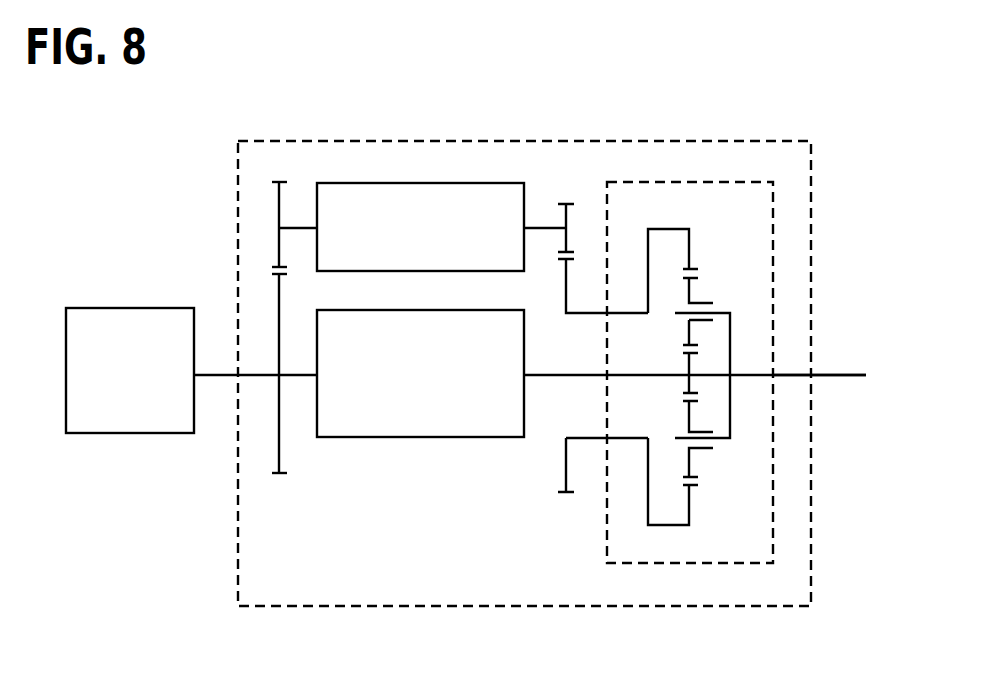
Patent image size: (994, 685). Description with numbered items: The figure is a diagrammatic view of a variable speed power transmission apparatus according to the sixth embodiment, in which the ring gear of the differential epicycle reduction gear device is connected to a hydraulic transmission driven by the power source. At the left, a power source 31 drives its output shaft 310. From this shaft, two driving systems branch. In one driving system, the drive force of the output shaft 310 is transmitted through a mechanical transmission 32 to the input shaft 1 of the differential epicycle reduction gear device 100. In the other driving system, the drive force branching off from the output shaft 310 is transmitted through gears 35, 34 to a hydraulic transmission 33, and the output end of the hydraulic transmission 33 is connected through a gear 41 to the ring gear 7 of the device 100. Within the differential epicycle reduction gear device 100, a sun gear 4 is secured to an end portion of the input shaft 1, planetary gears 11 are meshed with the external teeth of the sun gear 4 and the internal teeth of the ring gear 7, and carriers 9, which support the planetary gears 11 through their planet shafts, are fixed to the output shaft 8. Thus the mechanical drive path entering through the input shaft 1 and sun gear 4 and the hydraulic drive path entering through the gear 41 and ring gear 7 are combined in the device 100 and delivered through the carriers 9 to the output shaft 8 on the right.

The input shaft 1 is at (563, 377).
The sun gear 4 is at (689, 385).
The ring gear 7 is at (689, 245).
The output shaft 8 is at (822, 376).
The carriers 9 is at (730, 333).
The planetary gears 11 is at (689, 465).
The power source 31 is at (137, 308).
The mechanical transmission 32 is at (420, 438).
The hydraulic transmission 33 is at (422, 183).
The gear 34 is at (280, 182).
The gear 35 is at (279, 474).
The gear 41 is at (567, 223).
The differential epicycle reduction gear device 100 is at (751, 182).
The output shaft of the power source 310 is at (223, 375).